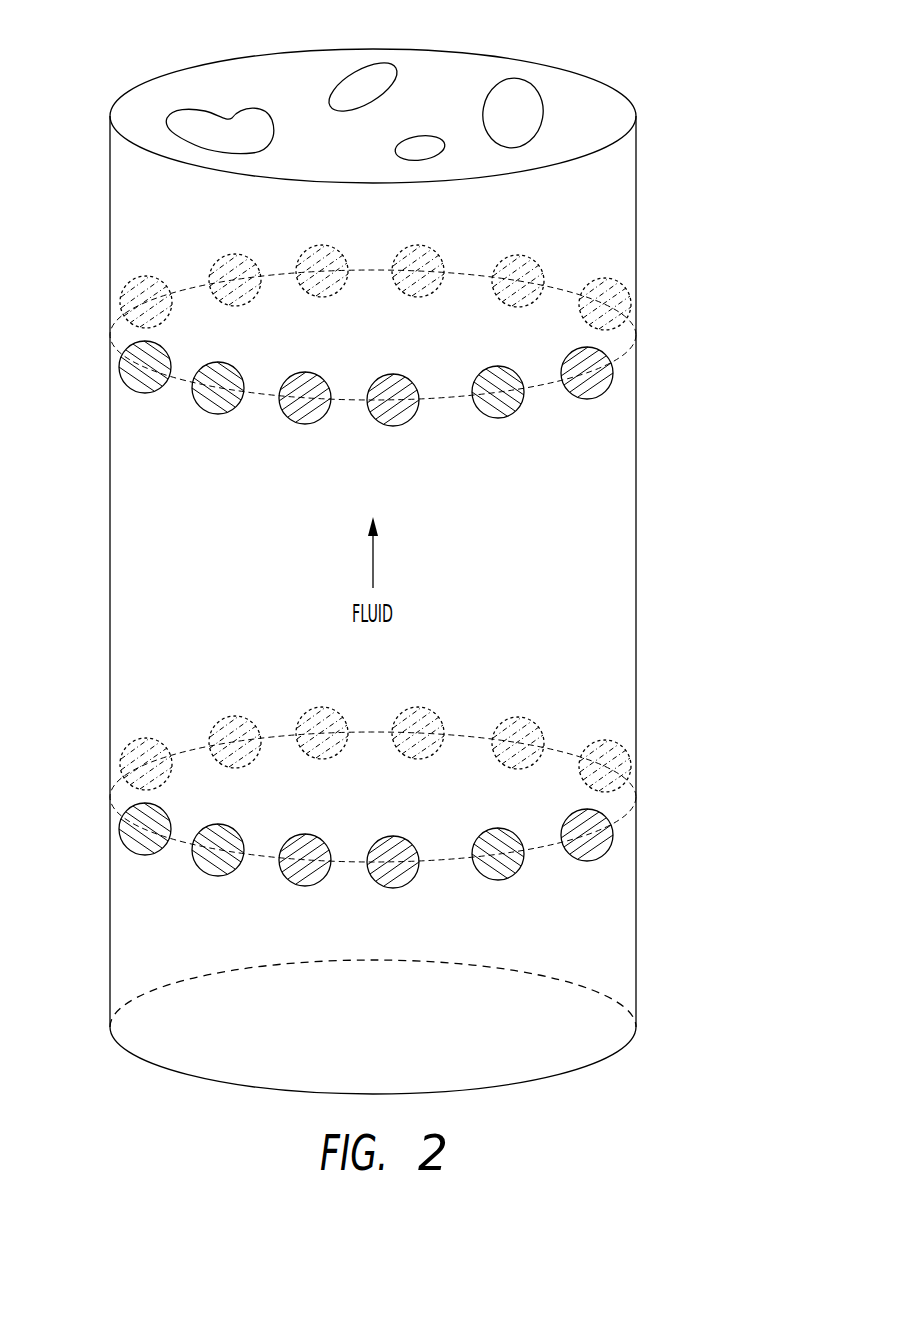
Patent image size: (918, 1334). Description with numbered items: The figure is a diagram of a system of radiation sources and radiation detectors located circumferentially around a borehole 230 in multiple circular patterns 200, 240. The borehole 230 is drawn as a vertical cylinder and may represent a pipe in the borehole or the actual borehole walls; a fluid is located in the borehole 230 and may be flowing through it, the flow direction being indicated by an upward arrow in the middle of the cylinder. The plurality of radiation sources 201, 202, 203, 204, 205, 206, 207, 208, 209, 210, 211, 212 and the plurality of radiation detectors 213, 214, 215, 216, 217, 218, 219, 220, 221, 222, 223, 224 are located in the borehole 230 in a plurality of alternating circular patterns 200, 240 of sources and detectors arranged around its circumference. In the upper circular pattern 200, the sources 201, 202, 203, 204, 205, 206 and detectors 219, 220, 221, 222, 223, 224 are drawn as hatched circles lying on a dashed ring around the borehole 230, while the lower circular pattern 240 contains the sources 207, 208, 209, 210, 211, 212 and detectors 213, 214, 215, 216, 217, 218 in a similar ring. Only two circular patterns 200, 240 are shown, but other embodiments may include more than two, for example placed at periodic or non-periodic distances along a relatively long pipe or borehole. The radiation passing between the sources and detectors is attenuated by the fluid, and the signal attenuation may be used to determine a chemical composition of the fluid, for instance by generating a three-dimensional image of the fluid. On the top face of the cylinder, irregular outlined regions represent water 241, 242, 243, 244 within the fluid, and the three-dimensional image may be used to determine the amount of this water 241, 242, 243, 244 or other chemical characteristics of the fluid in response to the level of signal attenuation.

The circular pattern 200 is at (664, 337).
The radiation source 201 is at (500, 418).
The radiation source 202 is at (303, 424).
The radiation source 203 is at (119, 367).
The radiation source 204 is at (226, 256).
The radiation source 205 is at (410, 247).
The radiation source 206 is at (631, 304).
The radiation source 207 is at (500, 880).
The radiation source 208 is at (303, 886).
The radiation source 209 is at (119, 829).
The radiation source 210 is at (226, 718).
The radiation source 211 is at (410, 709).
The radiation source 212 is at (631, 765).
The radiation detector 213 is at (392, 888).
The radiation detector 214 is at (212, 876).
The radiation detector 215 is at (120, 767).
The radiation detector 216 is at (313, 709).
The radiation detector 217 is at (512, 719).
The radiation detector 218 is at (583, 861).
The radiation detector 219 is at (392, 426).
The radiation detector 220 is at (212, 413).
The radiation detector 221 is at (120, 305).
The radiation detector 222 is at (313, 247).
The radiation detector 223 is at (512, 257).
The radiation detector 224 is at (583, 398).
The borehole 230 is at (638, 571).
The circular pattern 240 is at (664, 810).
The water 241 is at (253, 106).
The water 242 is at (376, 67).
The water 243 is at (440, 136).
The water 244 is at (528, 79).